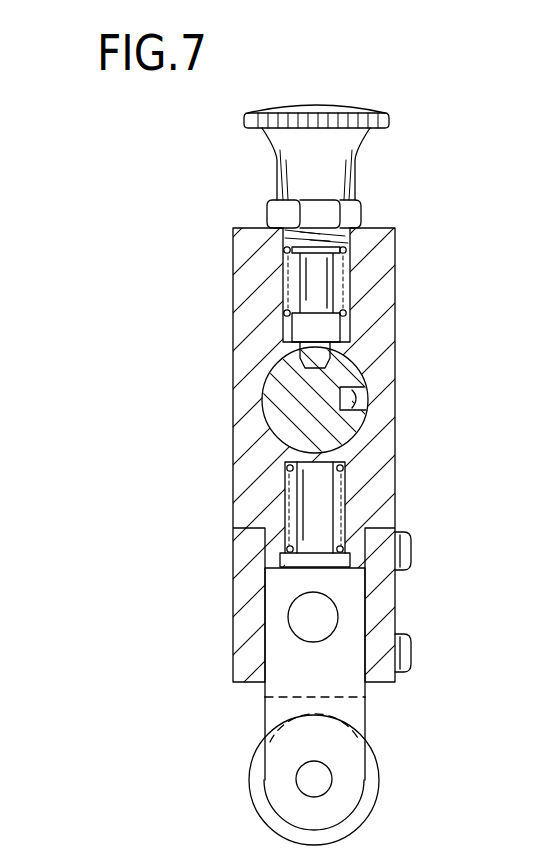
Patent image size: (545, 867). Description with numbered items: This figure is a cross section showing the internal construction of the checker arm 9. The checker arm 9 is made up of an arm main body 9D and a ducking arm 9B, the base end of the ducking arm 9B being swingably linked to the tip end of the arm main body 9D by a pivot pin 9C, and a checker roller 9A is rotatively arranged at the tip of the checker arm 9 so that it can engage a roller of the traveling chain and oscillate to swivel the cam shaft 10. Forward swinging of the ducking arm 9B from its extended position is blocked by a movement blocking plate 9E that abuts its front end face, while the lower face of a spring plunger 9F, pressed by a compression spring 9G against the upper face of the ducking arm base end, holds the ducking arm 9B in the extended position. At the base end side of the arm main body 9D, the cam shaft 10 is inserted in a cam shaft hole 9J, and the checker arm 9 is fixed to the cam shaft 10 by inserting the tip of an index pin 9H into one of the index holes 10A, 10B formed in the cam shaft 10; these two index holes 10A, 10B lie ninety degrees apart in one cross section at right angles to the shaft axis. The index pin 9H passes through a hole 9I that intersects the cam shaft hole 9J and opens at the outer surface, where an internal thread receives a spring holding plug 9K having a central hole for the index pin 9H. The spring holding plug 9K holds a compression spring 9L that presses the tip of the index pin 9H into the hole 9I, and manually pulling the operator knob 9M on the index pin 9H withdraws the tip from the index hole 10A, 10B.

The checker arm 9 is at (408, 432).
The checker roller 9A is at (378, 800).
The ducking arm 9B is at (362, 702).
The pivot pin 9C is at (323, 612).
The arm main body 9D is at (352, 470).
The movement blocking plate 9E is at (397, 620).
The spring plunger 9F is at (320, 503).
The compression spring 9G is at (282, 560).
The index pin 9H is at (318, 279).
The hole 9I is at (346, 250).
The cam shaft hole 9J is at (277, 440).
The spring holding plug 9K is at (352, 213).
The compression spring 9L is at (346, 310).
The operator knob 9M is at (333, 98).
The cam shaft 10 is at (277, 402).
The index hole 10A is at (303, 366).
The index hole 10B is at (362, 392).